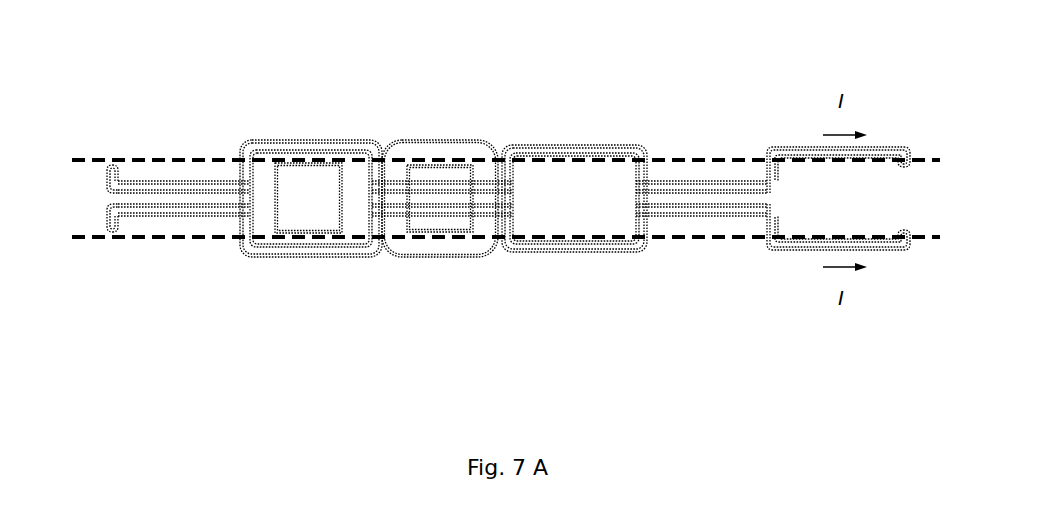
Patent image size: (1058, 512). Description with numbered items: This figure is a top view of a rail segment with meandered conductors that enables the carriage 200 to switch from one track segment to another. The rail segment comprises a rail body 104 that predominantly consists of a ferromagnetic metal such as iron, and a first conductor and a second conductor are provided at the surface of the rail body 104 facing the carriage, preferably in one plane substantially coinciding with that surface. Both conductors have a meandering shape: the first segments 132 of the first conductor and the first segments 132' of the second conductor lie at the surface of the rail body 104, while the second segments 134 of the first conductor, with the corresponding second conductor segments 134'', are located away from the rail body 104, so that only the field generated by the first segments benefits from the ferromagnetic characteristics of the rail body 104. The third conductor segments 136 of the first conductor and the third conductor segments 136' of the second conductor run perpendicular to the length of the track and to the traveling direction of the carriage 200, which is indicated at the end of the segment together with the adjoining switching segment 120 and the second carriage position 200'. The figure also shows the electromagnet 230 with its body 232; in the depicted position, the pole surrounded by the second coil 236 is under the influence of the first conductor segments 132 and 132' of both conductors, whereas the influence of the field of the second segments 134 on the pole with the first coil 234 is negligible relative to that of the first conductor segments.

The carriage 200 is at (90, 142).
The inlet pipe end 200' is at (90, 260).
The first segments of the first conductor 132 is at (184, 128).
The first segments of the second conductor 132' is at (184, 269).
The second segments of the first conductor 134 is at (311, 155).
The housing wall 134'' is at (294, 244).
The third conductor segments of the first conductor 136 is at (299, 160).
The third conductor segments of the second conductor 136' is at (316, 239).
The first coil 234 is at (355, 190).
The electromagnet 230 is at (433, 94).
The module housing 232 is at (487, 153).
The second coil 236 is at (462, 223).
The rail body 104 is at (716, 181).
The switching segment 120 is at (788, 94).